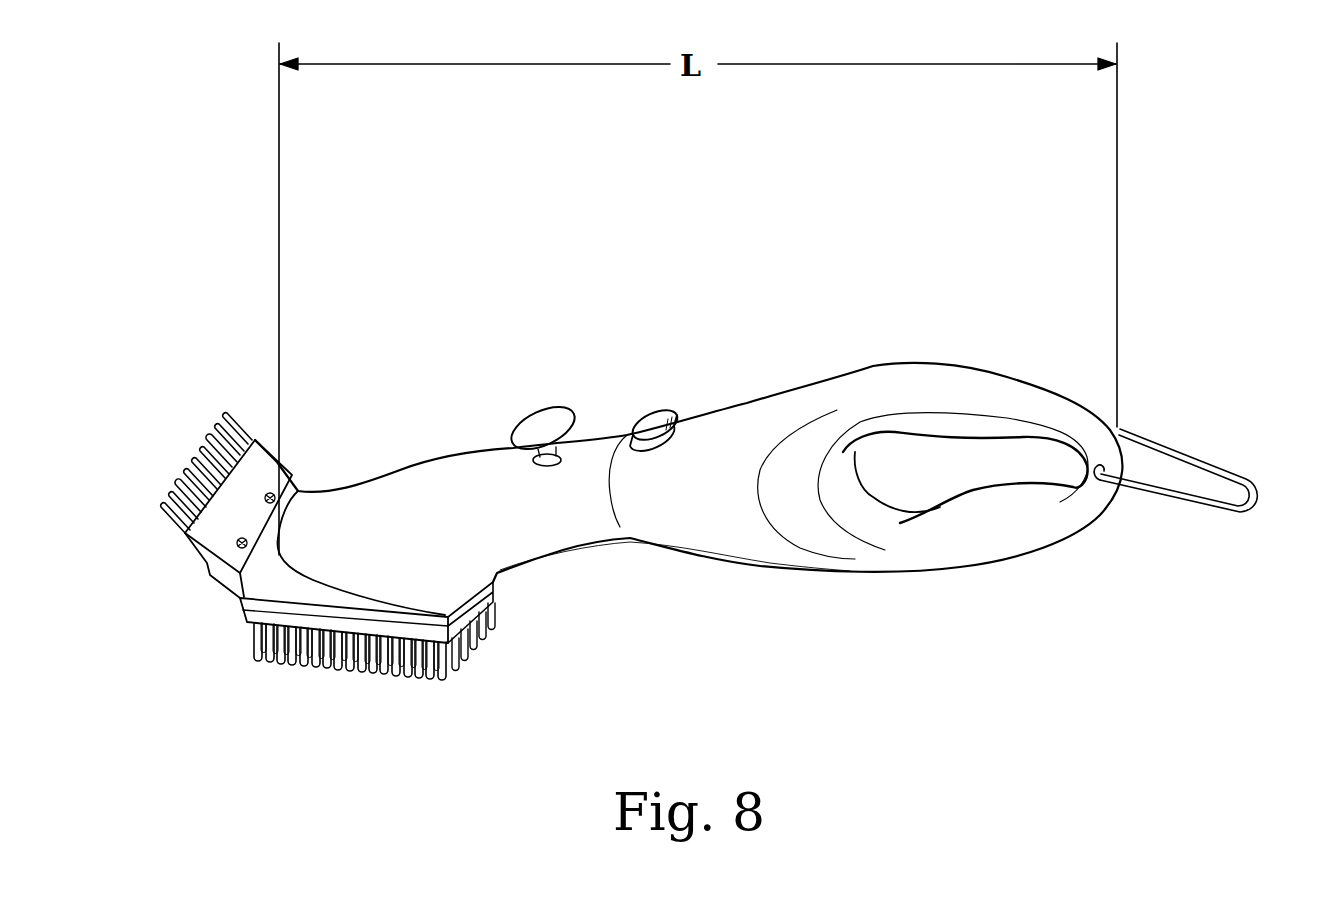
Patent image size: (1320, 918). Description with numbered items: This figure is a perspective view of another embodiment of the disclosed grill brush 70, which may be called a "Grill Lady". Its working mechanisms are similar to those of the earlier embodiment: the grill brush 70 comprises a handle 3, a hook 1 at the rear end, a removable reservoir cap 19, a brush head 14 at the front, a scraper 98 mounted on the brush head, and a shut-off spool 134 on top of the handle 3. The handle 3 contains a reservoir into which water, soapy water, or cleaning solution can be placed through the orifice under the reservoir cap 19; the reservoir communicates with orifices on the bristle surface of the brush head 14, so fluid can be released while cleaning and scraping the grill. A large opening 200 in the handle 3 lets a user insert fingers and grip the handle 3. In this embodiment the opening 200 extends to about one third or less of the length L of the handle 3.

The hook 1 is at (1195, 452).
The handle 3 is at (746, 427).
The brush head 14 is at (280, 613).
The reservoir cap 19 is at (645, 425).
The grill brush 70 is at (982, 262).
The scraper 98 is at (253, 465).
The shut-off spool 134 is at (541, 420).
The opening 200 is at (957, 465).